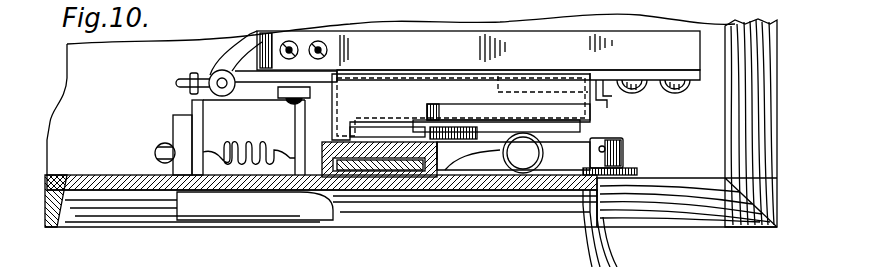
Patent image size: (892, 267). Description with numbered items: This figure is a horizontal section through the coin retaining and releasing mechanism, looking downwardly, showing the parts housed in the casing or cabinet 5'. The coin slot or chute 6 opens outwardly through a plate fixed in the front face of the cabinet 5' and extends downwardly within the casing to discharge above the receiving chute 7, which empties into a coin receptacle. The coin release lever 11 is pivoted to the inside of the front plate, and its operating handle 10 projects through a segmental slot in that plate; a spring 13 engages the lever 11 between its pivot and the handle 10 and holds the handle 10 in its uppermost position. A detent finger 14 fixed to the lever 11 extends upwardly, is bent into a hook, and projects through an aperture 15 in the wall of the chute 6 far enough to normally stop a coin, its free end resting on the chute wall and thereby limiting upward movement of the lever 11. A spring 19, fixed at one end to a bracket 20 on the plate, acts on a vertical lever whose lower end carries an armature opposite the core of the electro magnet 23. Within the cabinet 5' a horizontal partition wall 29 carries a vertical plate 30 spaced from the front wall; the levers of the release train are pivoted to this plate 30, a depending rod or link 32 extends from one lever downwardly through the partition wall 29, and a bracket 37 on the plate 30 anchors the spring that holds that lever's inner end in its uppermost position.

The casing or cabinet 5' is at (698, 123).
The coin slot or chute 6 is at (505, 98).
The receiving chute 7 is at (553, 133).
The operating handle 10 is at (620, 257).
The coin release lever 11 is at (560, 158).
The spring 13 is at (525, 170).
The detent finger 14 is at (415, 130).
The aperture 15 is at (370, 127).
The spring 19 is at (238, 141).
The bracket 20 is at (197, 146).
The electro magnet 23 is at (210, 120).
The horizontal partition wall 29 is at (72, 68).
The vertical plate 30 is at (680, 60).
The rod or link 32 is at (193, 73).
The bracket 37 is at (235, 60).